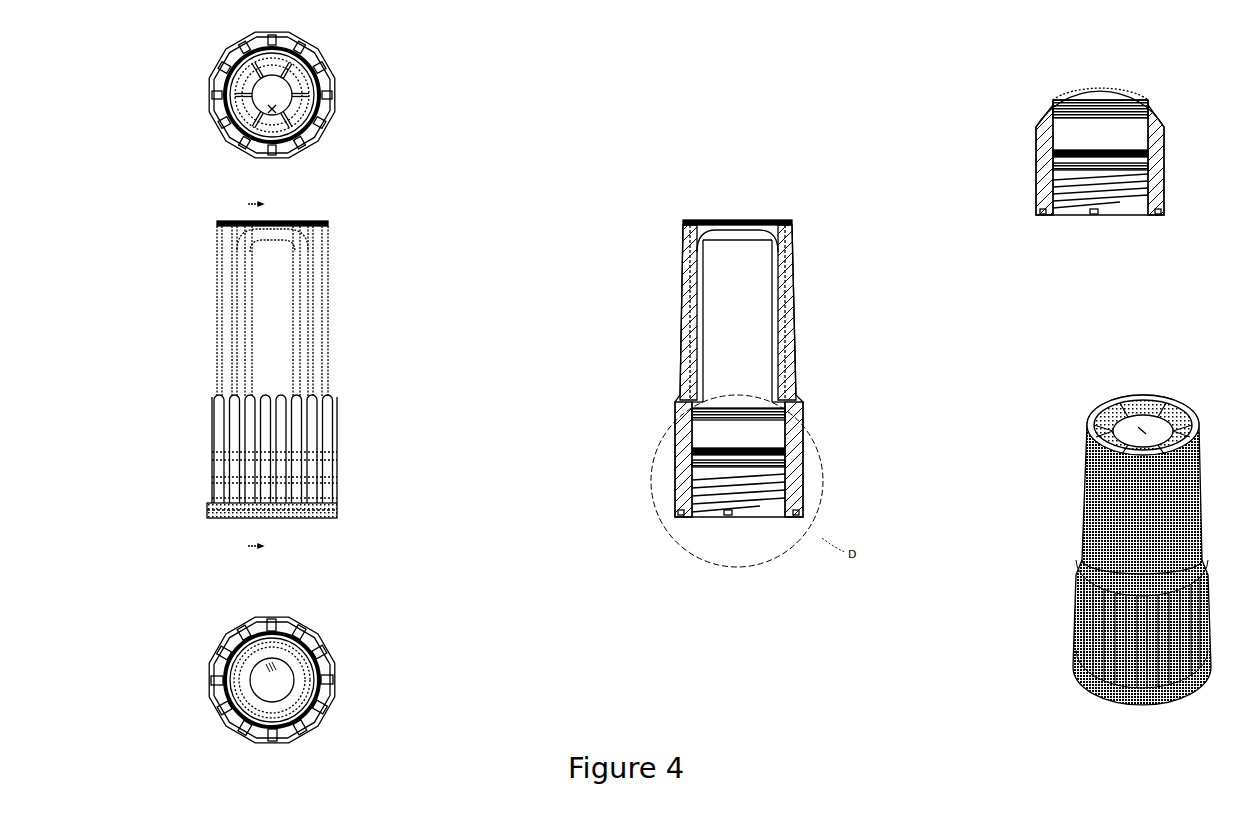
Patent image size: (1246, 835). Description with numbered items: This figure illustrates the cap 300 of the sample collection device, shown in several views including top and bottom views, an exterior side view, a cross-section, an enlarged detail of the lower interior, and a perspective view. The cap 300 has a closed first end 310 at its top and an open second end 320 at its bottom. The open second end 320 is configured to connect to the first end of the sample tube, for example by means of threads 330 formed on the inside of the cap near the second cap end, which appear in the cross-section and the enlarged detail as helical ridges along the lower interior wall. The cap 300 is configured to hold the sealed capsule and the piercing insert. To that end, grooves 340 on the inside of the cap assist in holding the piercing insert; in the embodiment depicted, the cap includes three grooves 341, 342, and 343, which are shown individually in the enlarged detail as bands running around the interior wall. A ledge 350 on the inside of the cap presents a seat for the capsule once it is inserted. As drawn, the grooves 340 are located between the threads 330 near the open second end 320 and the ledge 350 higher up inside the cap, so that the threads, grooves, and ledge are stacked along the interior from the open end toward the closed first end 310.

The cap 300 is at (624, 387).
The closed first end 310 is at (313, 211).
The open second end 320 is at (314, 530).
The threads 330 is at (690, 474).
The grooves 340 is at (786, 470).
The ledge 350 is at (786, 418).
The first groove 341 is at (1148, 135).
The second groove 342 is at (1148, 158).
The third groove 343 is at (1148, 165).